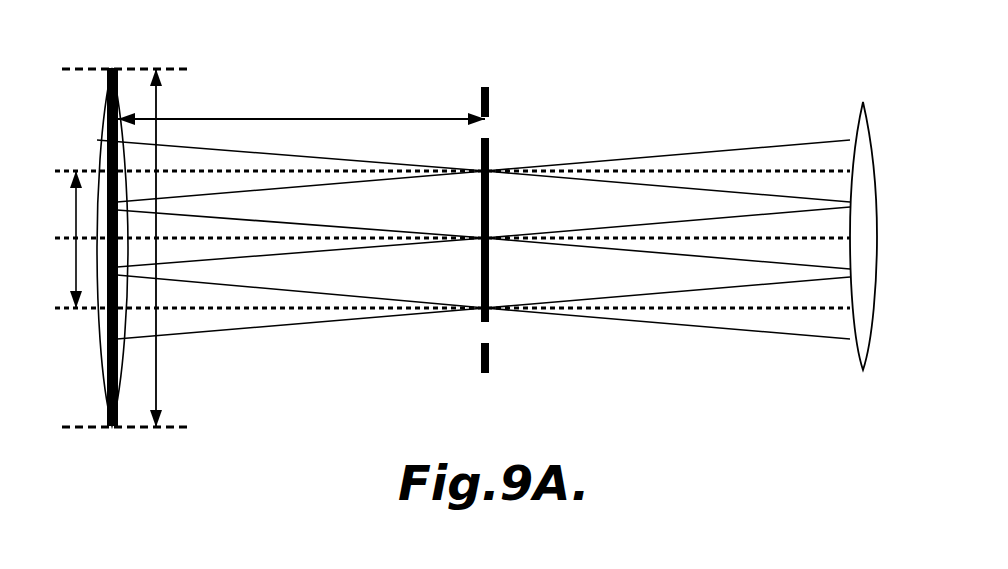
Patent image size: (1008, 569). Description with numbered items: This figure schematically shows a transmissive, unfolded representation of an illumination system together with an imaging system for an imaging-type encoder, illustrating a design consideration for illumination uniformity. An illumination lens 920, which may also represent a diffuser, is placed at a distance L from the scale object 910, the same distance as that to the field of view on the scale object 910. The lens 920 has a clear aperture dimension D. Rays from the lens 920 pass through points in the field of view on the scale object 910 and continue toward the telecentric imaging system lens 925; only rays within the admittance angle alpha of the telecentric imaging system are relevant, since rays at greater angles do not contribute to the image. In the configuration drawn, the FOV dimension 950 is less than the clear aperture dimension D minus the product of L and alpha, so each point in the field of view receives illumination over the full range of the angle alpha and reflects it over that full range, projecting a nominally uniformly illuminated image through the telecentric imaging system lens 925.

The lens 920 is at (112, 68).
The scale object 910 is at (486, 87).
The telecentric imaging system lens 925 is at (854, 110).
The FOV dimension 950 is at (76, 256).
The distance L is at (330, 119).
The clear aperture dimension D is at (157, 383).